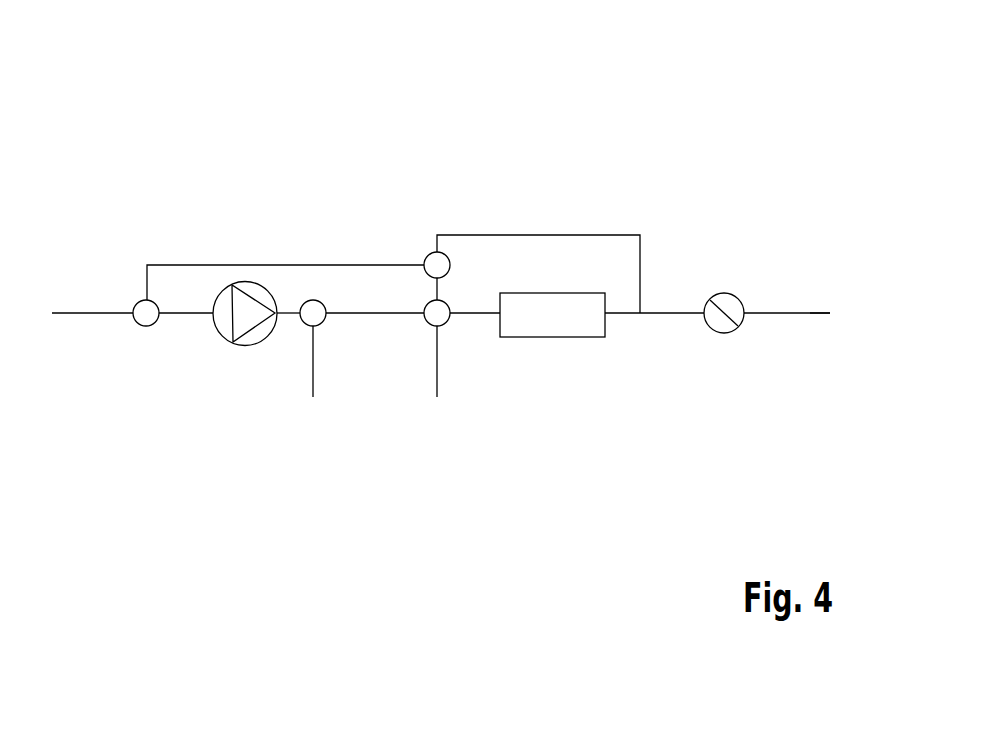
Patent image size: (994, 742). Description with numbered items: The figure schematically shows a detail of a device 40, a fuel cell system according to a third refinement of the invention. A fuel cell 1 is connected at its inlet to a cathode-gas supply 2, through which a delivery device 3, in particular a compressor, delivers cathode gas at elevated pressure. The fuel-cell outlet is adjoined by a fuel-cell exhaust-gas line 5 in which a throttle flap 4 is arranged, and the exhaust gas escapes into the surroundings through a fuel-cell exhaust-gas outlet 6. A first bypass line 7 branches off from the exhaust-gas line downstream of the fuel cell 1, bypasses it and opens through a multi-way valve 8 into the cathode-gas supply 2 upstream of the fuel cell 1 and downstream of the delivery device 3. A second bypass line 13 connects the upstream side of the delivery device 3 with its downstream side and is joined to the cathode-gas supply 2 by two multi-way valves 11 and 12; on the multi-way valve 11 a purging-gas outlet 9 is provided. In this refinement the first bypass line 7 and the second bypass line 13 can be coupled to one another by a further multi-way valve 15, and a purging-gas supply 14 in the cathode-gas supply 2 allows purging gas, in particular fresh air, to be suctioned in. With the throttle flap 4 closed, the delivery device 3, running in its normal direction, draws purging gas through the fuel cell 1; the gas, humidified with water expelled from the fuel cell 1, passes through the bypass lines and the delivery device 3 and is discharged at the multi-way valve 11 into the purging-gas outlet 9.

The fuel cell 1 is at (540, 337).
The cathode-gas supply 2 is at (378, 316).
The delivery device 3 is at (246, 346).
The throttle flap 4 is at (726, 334).
The fuel-cell exhaust-gas line 5 is at (777, 317).
The fuel-cell exhaust-gas outlet 6 is at (833, 318).
The first bypass line 7 is at (519, 235).
The multi-way valve 8 is at (440, 328).
The purging-gas outlet 9 is at (312, 363).
The multi-way valve 11 is at (316, 327).
The multi-way valve 12 is at (137, 305).
The second bypass line 13 is at (221, 265).
The purging-gas supply 14 is at (437, 363).
The multi-way valve 15 is at (433, 252).
The device 40 is at (738, 143).